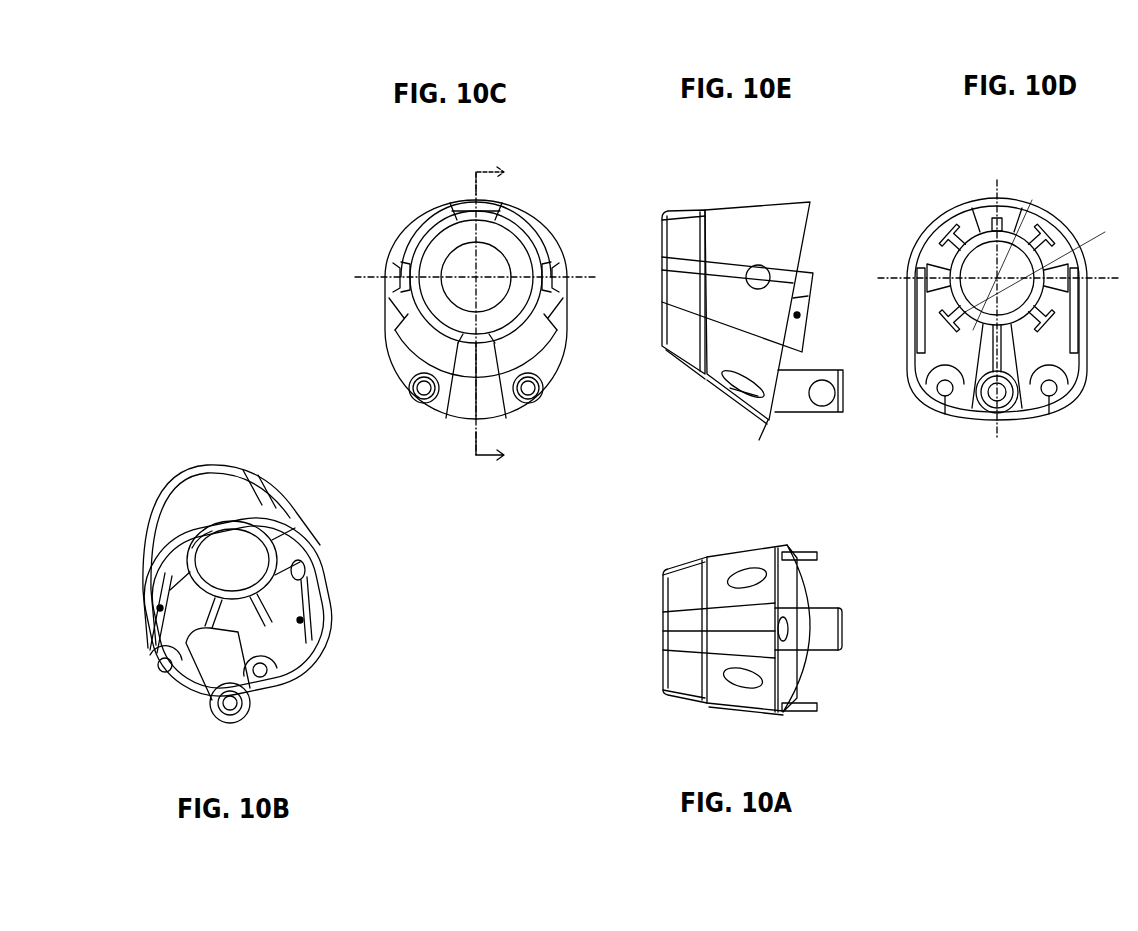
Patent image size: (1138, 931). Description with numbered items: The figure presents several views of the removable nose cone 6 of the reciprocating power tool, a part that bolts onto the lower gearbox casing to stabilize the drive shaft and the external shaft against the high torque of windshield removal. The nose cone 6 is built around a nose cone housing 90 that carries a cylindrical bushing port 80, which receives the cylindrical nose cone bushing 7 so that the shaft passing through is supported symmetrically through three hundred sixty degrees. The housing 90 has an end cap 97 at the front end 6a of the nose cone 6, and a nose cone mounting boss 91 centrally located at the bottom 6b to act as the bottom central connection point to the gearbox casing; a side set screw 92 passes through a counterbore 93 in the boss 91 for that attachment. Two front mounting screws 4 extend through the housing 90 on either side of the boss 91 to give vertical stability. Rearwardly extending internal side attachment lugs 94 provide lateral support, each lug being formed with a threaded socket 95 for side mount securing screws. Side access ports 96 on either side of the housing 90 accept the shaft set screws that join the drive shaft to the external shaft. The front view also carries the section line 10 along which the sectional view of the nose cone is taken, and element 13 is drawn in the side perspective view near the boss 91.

In FIG. 10C, the front mounting screws 4 is at (420, 390).
In FIG. 10C, the nose cone 6 is at (386, 232).
In FIG. 10D, the nose cone 6 is at (1068, 186).
In FIG. 10E, the nose cone 6 is at (777, 181).
In FIG. 10A, the nose cone 6 is at (742, 542).
In FIG. 10B, the nose cone 6 is at (322, 542).
In FIG. 10E, the front end 6a is at (661, 216).
In FIG. 10E, the bottom 6b is at (747, 443).
In FIG. 10D, the nose cone bushing 7 is at (1040, 285).
In FIG. 10C, the section line 10 is at (506, 314).
In FIG. 10A, the tab 13 is at (822, 608).
In FIG. 10D, the bushing port 80 is at (1040, 258).
In FIG. 10B, the bushing port 80 is at (253, 550).
In FIG. 10C, the nose cone housing 90 is at (427, 407).
In FIG. 10D, the nose cone housing 90 is at (1057, 380).
In FIG. 10E, the nose cone housing 90 is at (748, 222).
In FIG. 10A, the nose cone housing 90 is at (760, 551).
In FIG. 10B, the nose cone housing 90 is at (255, 490).
In FIG. 10D, the nose cone mounting boss 91 is at (1001, 426).
In FIG. 10E, the nose cone mounting boss 91 is at (743, 384).
In FIG. 10A, the nose cone mounting boss 91 is at (835, 628).
In FIG. 10B, the nose cone mounting boss 91 is at (252, 706).
In FIG. 10E, the side set screw 92 is at (830, 402).
In FIG. 10E, the counterbore 93 is at (800, 373).
In FIG. 10D, the internal side attachment lugs 94 is at (912, 322).
In FIG. 10E, the internal side attachment lugs 94 is at (808, 292).
In FIG. 10A, the internal side attachment lugs 94 is at (815, 555).
In FIG. 10B, the internal side attachment lugs 94 is at (313, 617).
In FIG. 10E, the threaded socket 95 is at (801, 315).
In FIG. 10B, the threaded socket 95 is at (306, 638).
In FIG. 10E, the side access ports 96 is at (762, 280).
In FIG. 10B, the side access ports 96 is at (303, 568).
In FIG. 10E, the end cap 97 is at (675, 354).
In FIG. 10A, the end cap 97 is at (683, 577).
In FIG. 10B, the end cap 97 is at (218, 465).